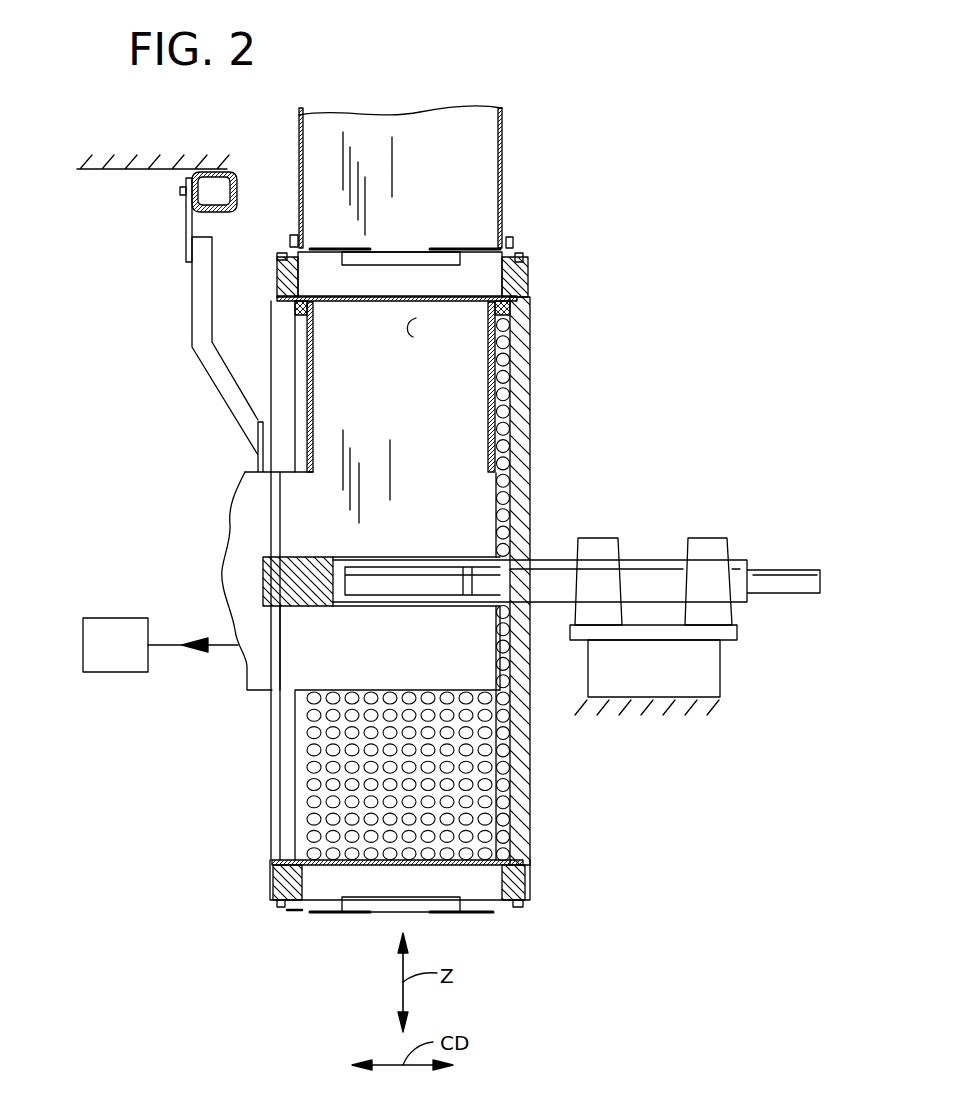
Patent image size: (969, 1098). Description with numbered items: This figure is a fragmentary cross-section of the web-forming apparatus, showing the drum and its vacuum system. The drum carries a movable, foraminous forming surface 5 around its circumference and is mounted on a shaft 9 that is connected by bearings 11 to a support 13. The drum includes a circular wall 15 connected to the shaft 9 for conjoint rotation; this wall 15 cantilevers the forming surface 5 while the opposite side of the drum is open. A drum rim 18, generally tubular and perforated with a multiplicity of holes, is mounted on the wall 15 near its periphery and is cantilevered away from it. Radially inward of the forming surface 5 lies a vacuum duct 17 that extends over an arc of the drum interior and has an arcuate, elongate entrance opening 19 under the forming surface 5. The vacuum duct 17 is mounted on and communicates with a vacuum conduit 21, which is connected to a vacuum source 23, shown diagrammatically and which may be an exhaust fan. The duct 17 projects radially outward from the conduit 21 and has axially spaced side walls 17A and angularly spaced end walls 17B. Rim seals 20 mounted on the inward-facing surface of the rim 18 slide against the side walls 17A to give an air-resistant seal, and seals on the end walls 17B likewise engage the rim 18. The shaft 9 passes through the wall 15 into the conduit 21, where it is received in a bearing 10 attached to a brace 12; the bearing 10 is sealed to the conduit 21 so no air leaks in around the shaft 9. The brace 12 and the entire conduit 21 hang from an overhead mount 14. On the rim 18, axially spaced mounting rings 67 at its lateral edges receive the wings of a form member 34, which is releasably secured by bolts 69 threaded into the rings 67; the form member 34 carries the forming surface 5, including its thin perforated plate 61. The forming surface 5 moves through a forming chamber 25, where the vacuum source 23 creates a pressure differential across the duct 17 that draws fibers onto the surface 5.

The forming chamber 25 is at (505, 128).
The perforated plate 61 is at (527, 224).
The forming surface 5 is at (440, 203).
The form member 34 is at (517, 235).
The drum rim 18 is at (370, 292).
The bolts 69 is at (292, 252).
The mounting rings 67 is at (288, 282).
The overhead mount 14 is at (196, 292).
The rim seals 20 is at (298, 320).
The vacuum duct 17 is at (297, 377).
The side walls 17A is at (313, 417).
The end walls 17B is at (490, 396).
The entrance opening 19 is at (413, 337).
The brace 12 is at (275, 490).
The vacuum conduit 21 is at (262, 690).
The bearing 10 is at (413, 607).
The shaft 9 is at (782, 558).
The bearings 11 is at (597, 538).
The support 13 is at (720, 672).
The circular wall 15 is at (527, 773).
The vacuum source 23 is at (118, 618).